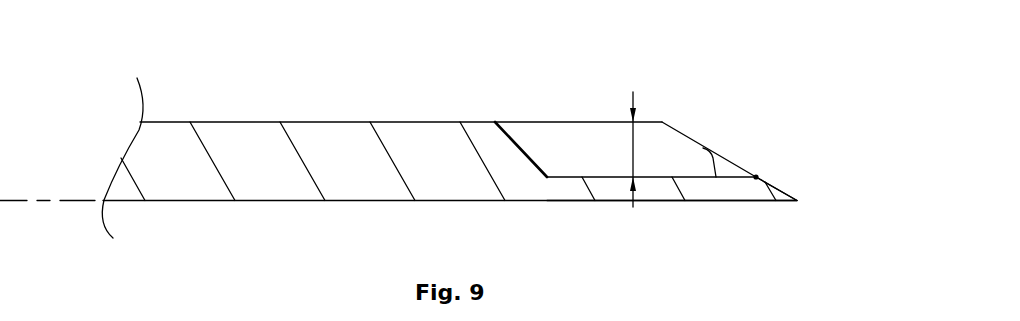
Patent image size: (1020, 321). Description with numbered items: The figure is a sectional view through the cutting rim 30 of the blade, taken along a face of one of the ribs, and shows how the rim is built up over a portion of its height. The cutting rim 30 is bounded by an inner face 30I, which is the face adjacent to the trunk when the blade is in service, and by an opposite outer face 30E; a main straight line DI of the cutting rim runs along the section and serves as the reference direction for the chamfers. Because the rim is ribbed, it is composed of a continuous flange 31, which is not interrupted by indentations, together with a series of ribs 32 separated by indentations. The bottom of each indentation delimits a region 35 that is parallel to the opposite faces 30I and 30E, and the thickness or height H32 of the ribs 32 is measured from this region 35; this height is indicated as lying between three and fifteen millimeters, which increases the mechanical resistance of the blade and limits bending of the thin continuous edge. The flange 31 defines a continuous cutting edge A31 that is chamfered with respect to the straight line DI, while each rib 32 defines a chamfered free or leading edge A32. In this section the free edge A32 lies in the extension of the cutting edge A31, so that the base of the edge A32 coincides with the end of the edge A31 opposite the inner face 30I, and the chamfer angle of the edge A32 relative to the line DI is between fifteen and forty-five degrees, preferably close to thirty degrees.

The cutting rim 30 is at (480, 162).
The outer face 30E is at (255, 104).
The inner face 30I is at (298, 212).
The main straight line DI is at (20, 203).
The continuous flange 31 is at (660, 190).
The rib 32 is at (652, 152).
The region 35 is at (568, 175).
The cutting edge A31 is at (741, 211).
The free edge A32 is at (675, 127).
The height of the ribs H32 is at (609, 149).